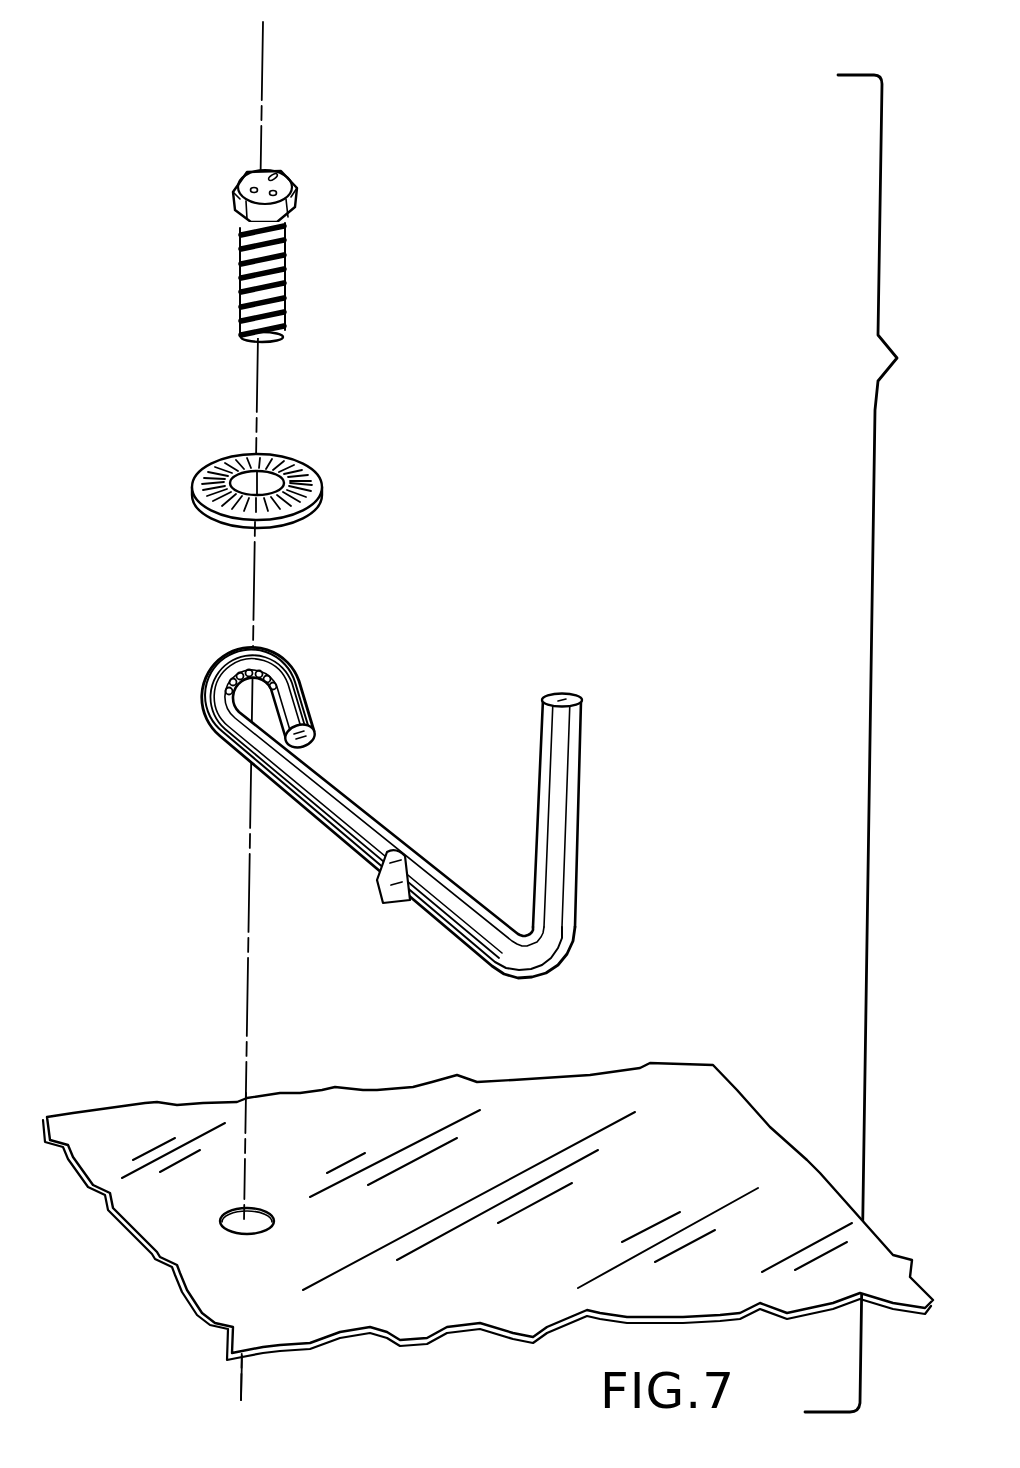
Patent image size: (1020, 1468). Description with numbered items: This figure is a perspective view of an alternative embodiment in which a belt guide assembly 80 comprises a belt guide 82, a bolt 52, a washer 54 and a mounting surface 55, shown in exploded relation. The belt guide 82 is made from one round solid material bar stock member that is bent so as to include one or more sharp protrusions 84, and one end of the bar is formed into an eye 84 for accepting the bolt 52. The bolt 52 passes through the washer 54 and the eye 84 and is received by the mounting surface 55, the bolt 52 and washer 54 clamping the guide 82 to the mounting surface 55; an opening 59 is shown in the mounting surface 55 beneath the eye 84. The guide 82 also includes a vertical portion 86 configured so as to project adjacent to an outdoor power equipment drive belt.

The bolt 52 is at (278, 253).
The washer 54 is at (303, 470).
The mounting surface 55 is at (685, 1108).
The hole in plate 59 is at (240, 1235).
The belt guide assembly 80 is at (870, 743).
The belt guide 82 is at (416, 812).
The sharp protrusions 84 is at (267, 668).
The vertical portion 86 is at (567, 790).